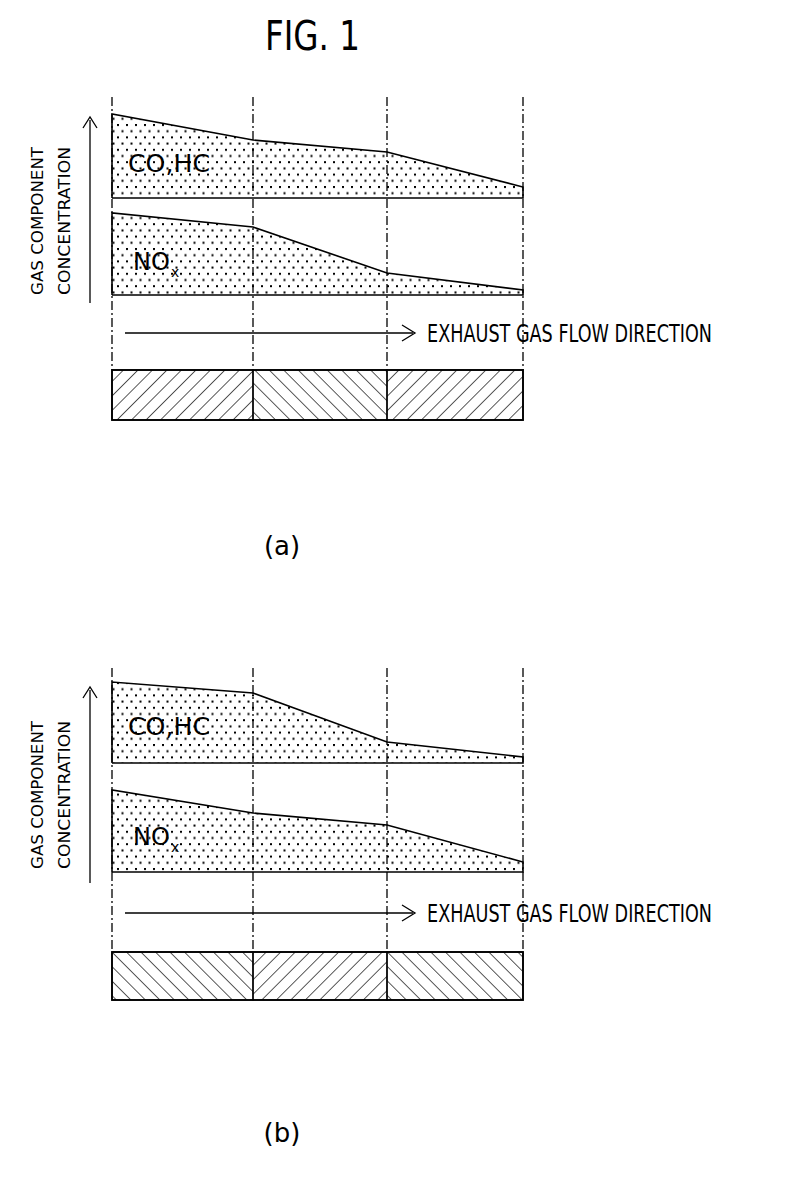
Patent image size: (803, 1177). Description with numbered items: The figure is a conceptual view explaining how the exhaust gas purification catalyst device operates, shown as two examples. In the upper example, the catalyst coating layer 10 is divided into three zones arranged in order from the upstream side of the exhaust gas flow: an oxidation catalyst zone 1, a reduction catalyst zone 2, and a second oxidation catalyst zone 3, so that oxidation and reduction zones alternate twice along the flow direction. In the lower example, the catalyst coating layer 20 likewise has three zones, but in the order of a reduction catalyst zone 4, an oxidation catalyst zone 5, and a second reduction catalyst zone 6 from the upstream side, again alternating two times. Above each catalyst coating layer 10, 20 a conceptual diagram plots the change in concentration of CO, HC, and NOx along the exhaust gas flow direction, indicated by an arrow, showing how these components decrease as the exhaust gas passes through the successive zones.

The oxidation catalyst zone 1 is at (157, 397).
The reduction catalyst zone 2 is at (303, 397).
The oxidation catalyst zone 3 is at (440, 397).
The reduction catalyst zone 4 is at (157, 988).
The oxidation catalyst zone 5 is at (303, 988).
The reduction catalyst zone 6 is at (440, 988).
The catalyst coating layer 10 is at (381, 432).
The catalyst coating layer 20 is at (378, 1016).